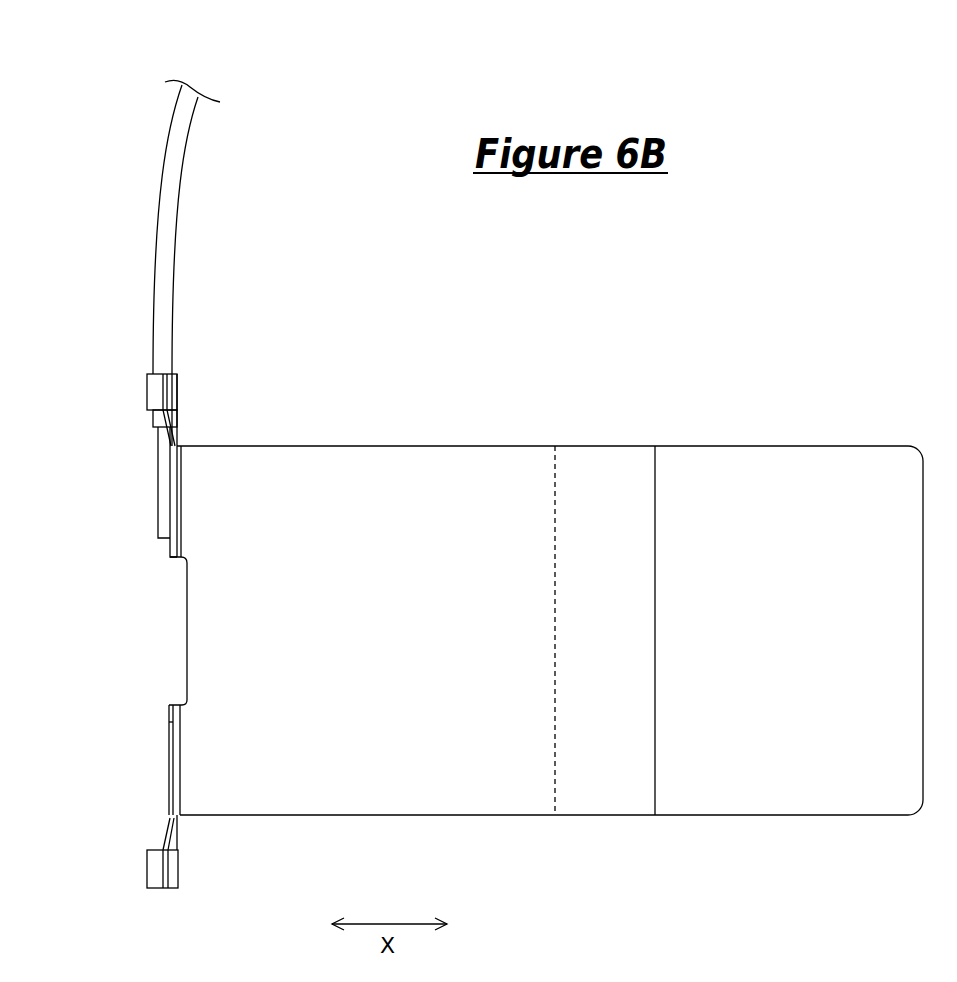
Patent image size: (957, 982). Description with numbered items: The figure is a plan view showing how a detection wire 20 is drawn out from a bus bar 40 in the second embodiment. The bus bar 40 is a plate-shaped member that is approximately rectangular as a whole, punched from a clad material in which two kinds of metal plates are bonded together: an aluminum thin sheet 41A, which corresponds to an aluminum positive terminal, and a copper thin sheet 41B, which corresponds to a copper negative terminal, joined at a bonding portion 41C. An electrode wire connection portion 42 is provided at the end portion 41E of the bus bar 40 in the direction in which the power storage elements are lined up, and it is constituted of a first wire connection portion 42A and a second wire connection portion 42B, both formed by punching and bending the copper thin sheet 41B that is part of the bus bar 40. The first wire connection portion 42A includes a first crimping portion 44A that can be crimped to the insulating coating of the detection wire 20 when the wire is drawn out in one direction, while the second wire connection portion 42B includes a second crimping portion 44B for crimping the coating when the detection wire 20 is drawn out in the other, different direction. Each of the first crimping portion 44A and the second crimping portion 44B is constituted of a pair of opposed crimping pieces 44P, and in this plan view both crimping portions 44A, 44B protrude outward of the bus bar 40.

The detection wire 20 is at (186, 276).
The bus bar 40 is at (546, 621).
The aluminum thin sheet 41A is at (698, 467).
The copper thin sheet 41B is at (423, 485).
The bonding portion 41C is at (617, 470).
The end portion 41E is at (182, 525).
The electrode wire connection portion 42 is at (202, 661).
The first wire connection portion 42A is at (178, 427).
The second wire connection portion 42B is at (179, 842).
The crimping pieces 44P is at (114, 649).
The first crimping portion 44A is at (147, 392).
The second crimping portion 44B is at (147, 869).